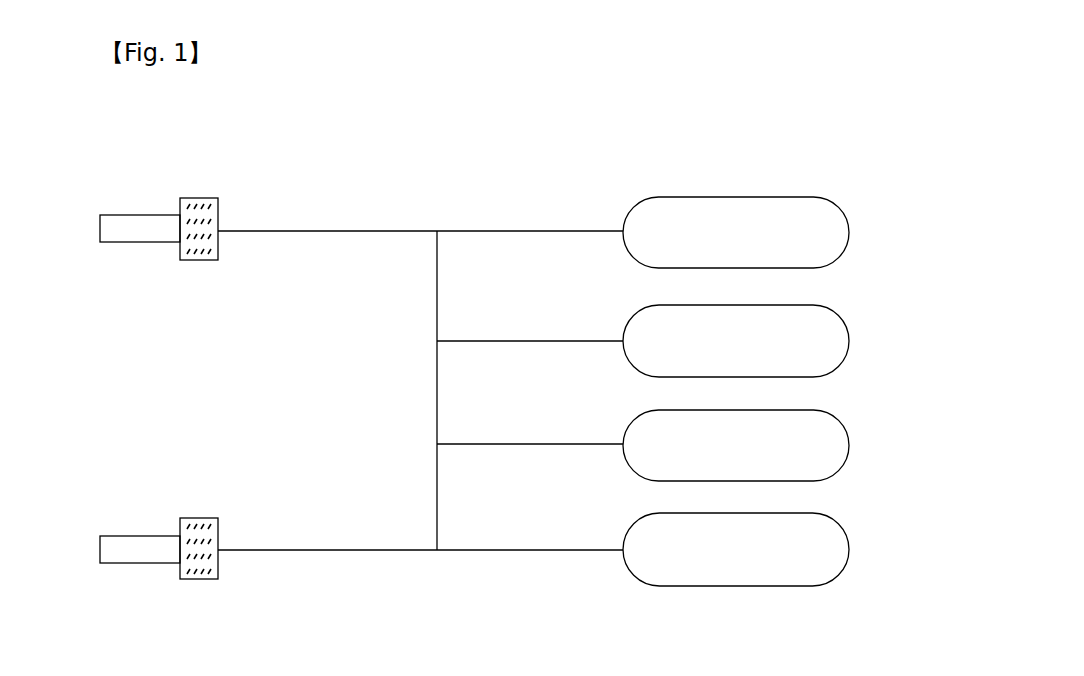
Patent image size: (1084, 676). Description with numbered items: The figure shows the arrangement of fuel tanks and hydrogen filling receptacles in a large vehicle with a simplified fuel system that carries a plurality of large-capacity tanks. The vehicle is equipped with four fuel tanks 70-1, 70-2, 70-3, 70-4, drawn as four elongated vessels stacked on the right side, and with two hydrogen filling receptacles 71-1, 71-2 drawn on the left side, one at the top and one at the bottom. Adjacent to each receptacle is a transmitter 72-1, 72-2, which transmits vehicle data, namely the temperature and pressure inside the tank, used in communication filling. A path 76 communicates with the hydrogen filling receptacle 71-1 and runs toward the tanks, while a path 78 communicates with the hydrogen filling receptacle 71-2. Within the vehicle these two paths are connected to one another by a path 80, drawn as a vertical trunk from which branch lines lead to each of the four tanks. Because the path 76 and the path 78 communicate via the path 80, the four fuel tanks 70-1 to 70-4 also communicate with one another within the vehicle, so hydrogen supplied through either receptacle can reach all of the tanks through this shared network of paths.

The fuel tank 70-1 is at (845, 210).
The fuel tank 70-2 is at (847, 325).
The fuel tank 70-3 is at (847, 440).
The fuel tank 70-4 is at (848, 550).
The hydrogen filling receptacle 71-1 is at (135, 215).
The hydrogen filling receptacle 71-2 is at (135, 536).
The transmitter 72-1 is at (198, 198).
The transmitter 72-2 is at (199, 518).
The path 76 is at (354, 231).
The path 78 is at (343, 552).
The path 80 is at (437, 395).